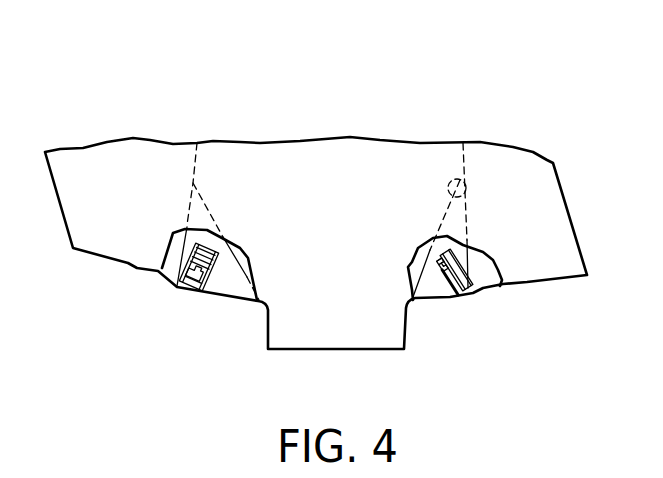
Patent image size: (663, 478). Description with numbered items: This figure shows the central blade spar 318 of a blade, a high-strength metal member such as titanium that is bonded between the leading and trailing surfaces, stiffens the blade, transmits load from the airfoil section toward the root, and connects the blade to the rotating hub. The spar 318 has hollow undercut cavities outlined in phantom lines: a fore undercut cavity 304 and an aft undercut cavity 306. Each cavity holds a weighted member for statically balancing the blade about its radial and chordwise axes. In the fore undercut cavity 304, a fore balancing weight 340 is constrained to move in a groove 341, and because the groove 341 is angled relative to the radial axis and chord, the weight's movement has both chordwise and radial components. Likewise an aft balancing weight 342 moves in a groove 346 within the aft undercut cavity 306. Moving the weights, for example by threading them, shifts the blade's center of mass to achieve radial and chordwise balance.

The blade spar 318 is at (315, 158).
The fore undercut cavity 304 is at (210, 216).
The aft undercut cavity 306 is at (468, 182).
The fore balancing weight 340 is at (207, 257).
The groove 341 is at (200, 280).
The aft balancing weight 342 is at (437, 257).
The groove 346 is at (445, 300).